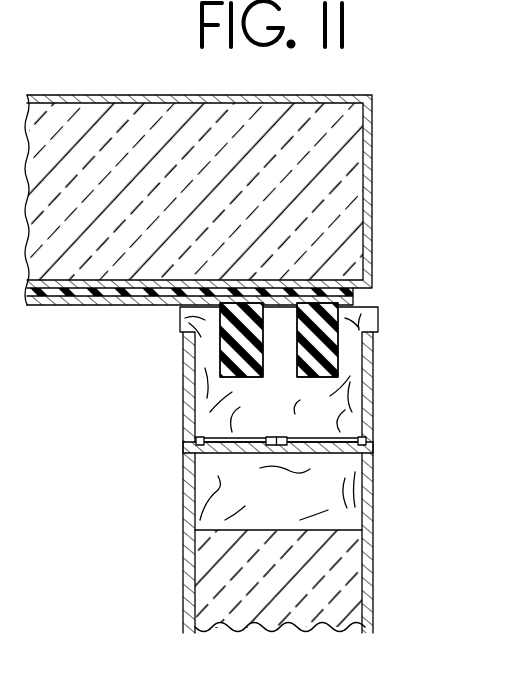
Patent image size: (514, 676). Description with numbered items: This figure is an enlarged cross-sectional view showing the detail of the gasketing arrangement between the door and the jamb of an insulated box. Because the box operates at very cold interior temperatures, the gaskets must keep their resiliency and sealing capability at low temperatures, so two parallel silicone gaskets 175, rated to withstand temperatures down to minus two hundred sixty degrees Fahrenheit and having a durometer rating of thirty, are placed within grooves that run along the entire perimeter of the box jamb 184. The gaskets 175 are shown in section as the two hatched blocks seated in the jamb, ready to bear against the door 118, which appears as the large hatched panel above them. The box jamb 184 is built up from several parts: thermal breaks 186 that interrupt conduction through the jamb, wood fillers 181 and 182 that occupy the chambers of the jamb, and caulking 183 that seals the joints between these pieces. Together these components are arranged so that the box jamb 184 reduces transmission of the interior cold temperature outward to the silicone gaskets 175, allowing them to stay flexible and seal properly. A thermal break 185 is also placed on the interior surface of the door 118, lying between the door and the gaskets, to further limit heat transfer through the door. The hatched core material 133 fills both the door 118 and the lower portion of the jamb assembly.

The door 118 is at (218, 92).
The core material 133 is at (211, 206).
The silicone gaskets 175 is at (319, 304).
The wood filler 181 is at (374, 410).
The wood filler 182 is at (297, 515).
The caulking 183 is at (358, 437).
The box jamb 184 is at (373, 561).
The thermal break 185 is at (107, 306).
The thermal breaks 186 is at (187, 378).